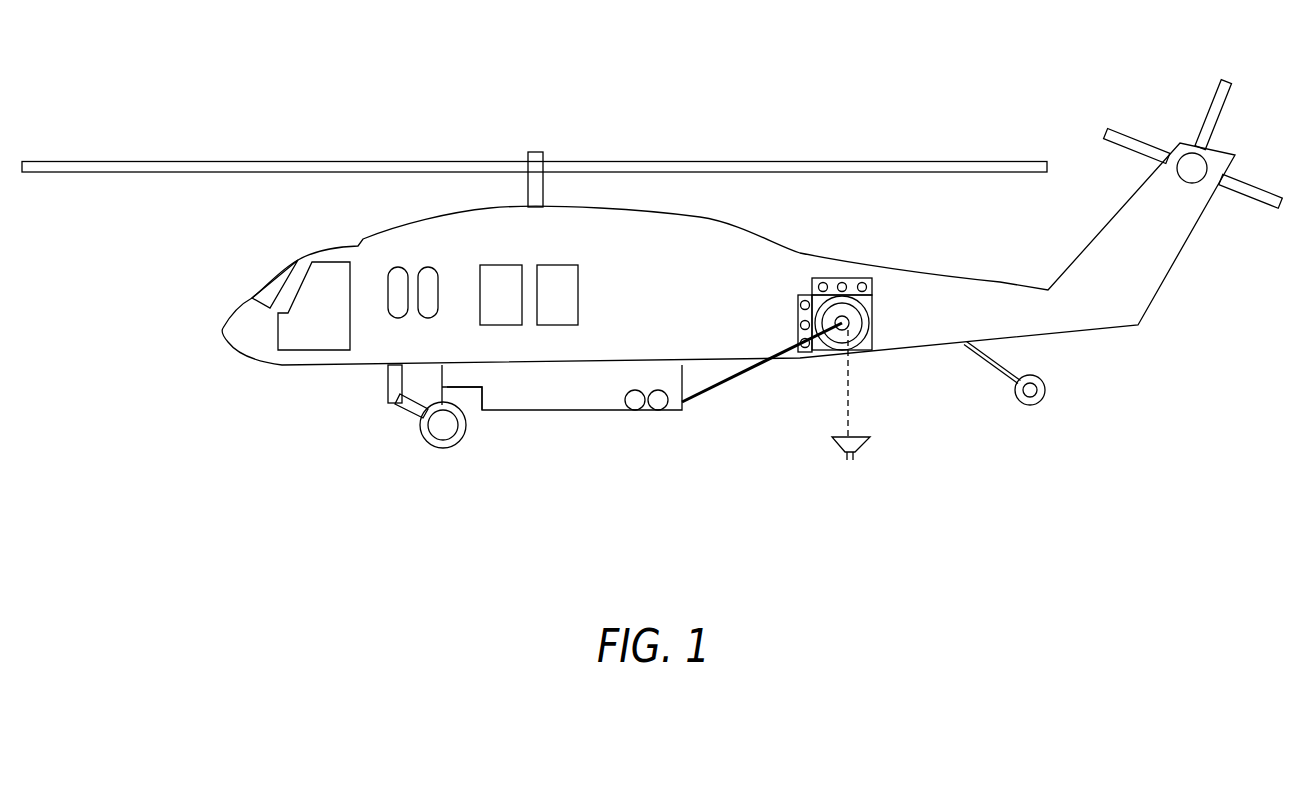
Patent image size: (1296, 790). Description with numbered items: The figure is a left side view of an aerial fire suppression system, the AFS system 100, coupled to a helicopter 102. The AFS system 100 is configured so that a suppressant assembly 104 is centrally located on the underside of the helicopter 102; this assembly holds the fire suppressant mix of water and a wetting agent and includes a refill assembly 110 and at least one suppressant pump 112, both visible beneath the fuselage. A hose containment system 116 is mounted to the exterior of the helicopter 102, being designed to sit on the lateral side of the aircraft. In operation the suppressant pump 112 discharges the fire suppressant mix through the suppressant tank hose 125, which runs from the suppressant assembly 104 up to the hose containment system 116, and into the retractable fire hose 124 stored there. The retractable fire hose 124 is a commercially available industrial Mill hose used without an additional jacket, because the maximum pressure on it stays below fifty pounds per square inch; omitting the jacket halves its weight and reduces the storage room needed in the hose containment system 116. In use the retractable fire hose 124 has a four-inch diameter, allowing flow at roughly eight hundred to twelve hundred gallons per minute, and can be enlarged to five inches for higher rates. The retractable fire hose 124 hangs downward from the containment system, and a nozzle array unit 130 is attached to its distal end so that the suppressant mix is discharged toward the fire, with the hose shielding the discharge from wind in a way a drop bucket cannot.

The AFS system 100 is at (327, 443).
The helicopter 102 is at (238, 328).
The suppressant assembly 104 is at (548, 410).
The refill assembly 110 is at (468, 402).
The suppressant pump 112 is at (633, 402).
The hose containment system 116 is at (848, 278).
The retractable fire hose 124 is at (850, 367).
The suppressant tank hose 125 is at (737, 383).
The nozzle array unit 130 is at (855, 443).